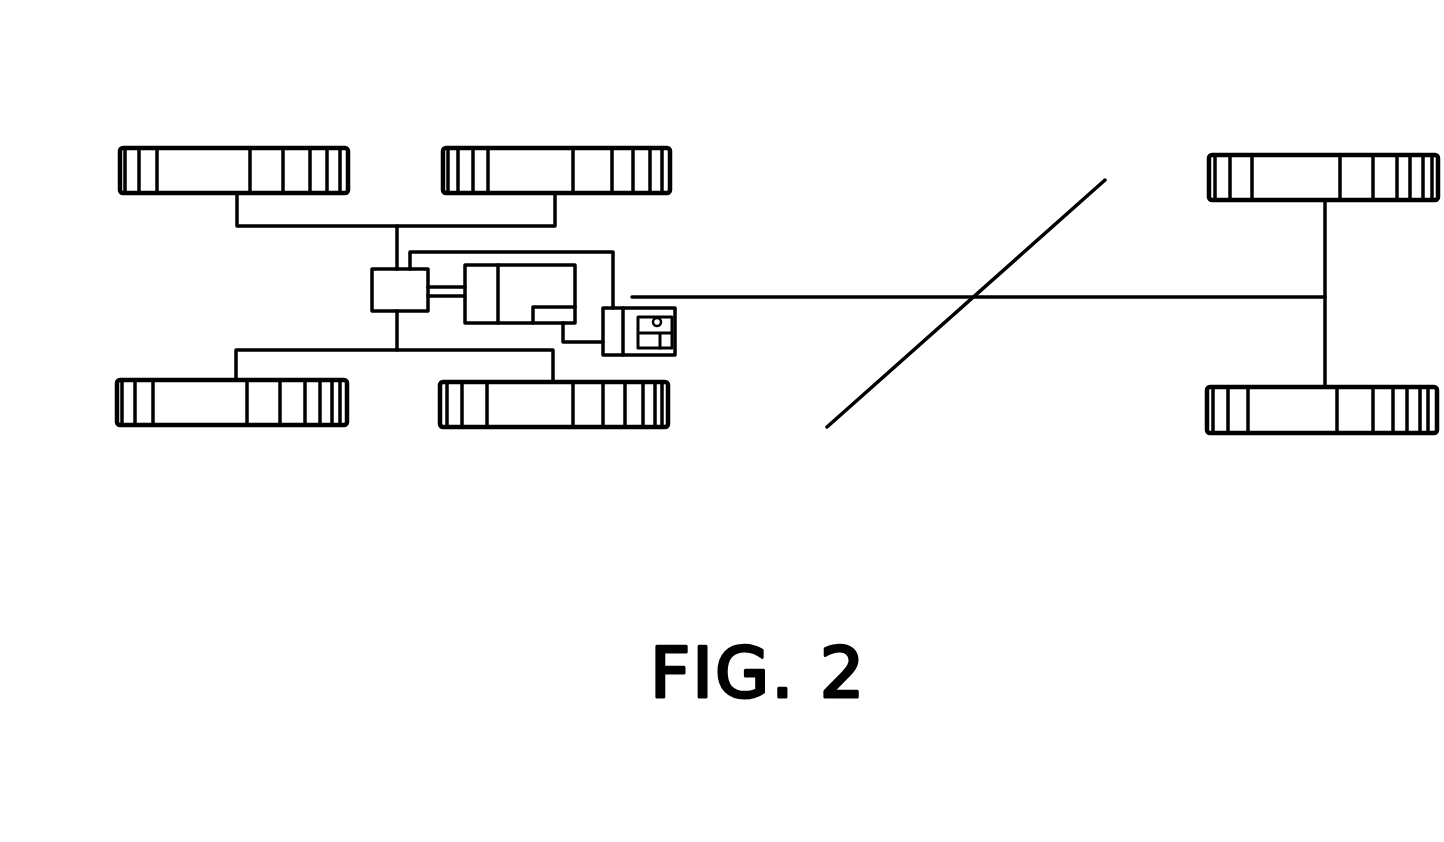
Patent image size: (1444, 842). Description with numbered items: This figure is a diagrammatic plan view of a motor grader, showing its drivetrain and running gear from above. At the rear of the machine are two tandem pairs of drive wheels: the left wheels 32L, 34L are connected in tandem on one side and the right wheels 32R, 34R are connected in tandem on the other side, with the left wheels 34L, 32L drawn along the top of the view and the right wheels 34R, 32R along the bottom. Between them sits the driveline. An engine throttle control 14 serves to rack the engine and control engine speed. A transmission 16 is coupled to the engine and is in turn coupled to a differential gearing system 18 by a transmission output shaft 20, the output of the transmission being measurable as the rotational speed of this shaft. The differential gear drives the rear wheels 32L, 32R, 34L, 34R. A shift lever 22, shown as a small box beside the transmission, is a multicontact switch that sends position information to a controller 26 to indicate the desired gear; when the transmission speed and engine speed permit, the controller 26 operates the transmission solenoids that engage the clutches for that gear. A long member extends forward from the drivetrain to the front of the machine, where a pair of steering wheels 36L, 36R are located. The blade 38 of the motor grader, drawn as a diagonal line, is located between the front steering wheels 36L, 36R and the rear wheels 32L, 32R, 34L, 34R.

The engine throttle control 14 is at (546, 320).
The transmission 16 is at (478, 275).
The differential gearing system 18 is at (382, 285).
The transmission output shaft 20 is at (443, 290).
The shift lever 22 is at (672, 352).
The controller 26 is at (610, 345).
The left rear wheel 32L is at (545, 157).
The right rear wheel 32R is at (617, 420).
The left rear wheel 34L is at (201, 160).
The right rear wheel 34R is at (238, 420).
The left steering wheel 36L is at (1355, 162).
The right steering wheel 36R is at (1388, 423).
The blade 38 is at (917, 350).